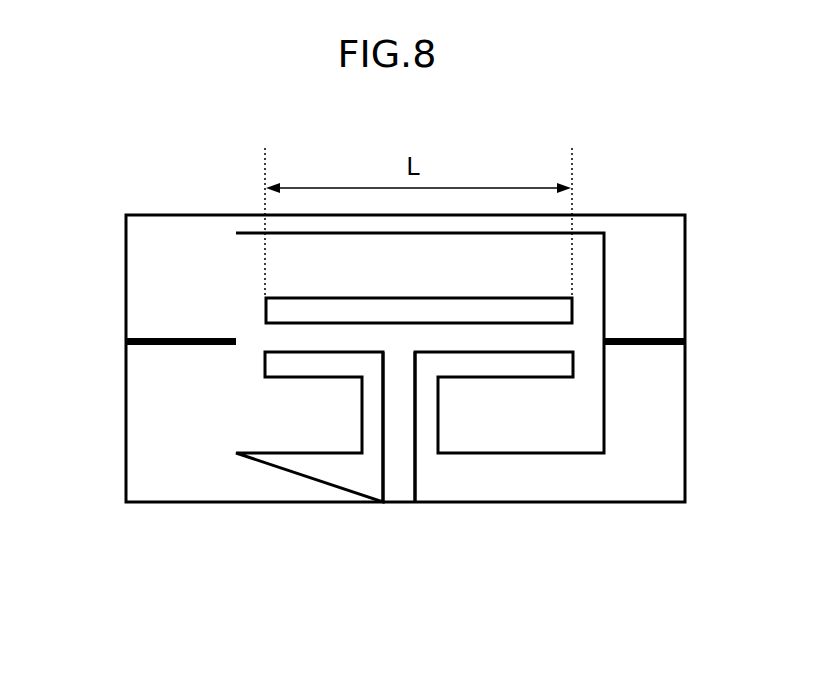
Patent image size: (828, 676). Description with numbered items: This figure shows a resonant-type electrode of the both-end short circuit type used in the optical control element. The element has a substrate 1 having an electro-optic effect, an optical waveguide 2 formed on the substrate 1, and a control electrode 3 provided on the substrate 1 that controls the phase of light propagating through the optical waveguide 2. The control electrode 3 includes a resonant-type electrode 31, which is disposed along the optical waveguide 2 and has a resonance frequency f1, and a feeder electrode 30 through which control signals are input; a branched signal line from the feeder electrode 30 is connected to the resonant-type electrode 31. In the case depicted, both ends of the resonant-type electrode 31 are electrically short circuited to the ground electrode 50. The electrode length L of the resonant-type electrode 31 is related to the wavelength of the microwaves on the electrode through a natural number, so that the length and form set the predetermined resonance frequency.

The substrate 1 is at (175, 462).
The optical waveguide 2 is at (210, 345).
The control electrode 3 is at (369, 459).
The feeder electrode 30 is at (398, 485).
The resonant-type electrode 31 is at (517, 337).
The ground electrode 50 is at (295, 267).